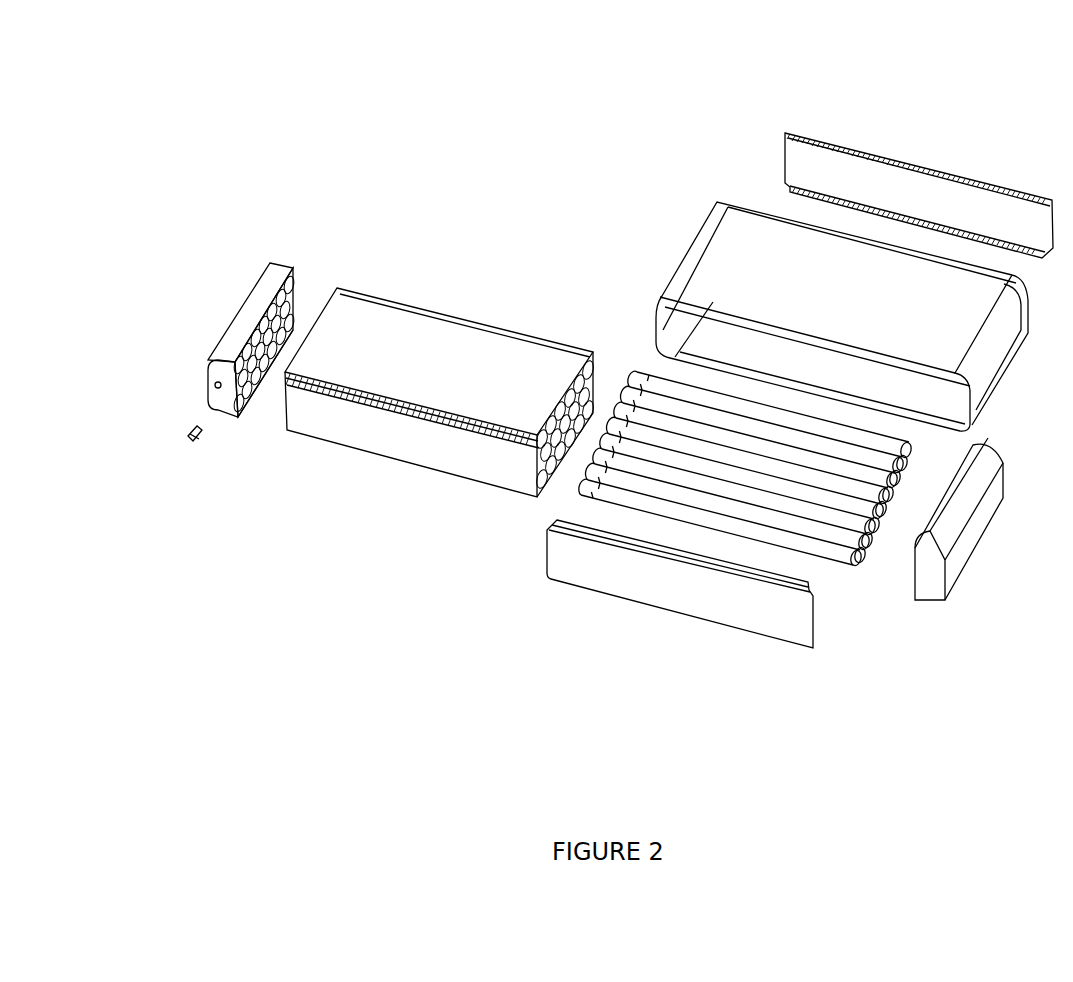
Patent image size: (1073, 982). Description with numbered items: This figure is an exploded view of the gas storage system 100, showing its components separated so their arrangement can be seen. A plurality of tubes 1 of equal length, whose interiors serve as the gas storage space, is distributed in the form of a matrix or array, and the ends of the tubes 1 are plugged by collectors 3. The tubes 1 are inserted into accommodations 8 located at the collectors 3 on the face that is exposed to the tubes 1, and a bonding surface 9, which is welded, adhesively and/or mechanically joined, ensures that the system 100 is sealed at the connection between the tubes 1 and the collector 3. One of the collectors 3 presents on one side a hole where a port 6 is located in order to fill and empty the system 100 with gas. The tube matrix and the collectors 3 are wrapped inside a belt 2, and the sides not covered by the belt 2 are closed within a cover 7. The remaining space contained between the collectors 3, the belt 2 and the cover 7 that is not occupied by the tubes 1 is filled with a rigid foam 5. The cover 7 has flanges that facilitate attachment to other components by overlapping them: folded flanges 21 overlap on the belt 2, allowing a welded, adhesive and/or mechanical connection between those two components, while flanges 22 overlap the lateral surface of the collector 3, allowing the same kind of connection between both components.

The system 100 is at (354, 132).
The tubes 1 is at (665, 384).
The belt 2 is at (715, 290).
The collectors 3 is at (272, 262).
The rigid foam 5 is at (381, 321).
The port 6 is at (204, 444).
The cover 7 is at (582, 563).
The accommodations 8 is at (248, 407).
The bonding surface 9 is at (856, 563).
The folded flanges 21 is at (813, 187).
The flanges 22 is at (783, 155).